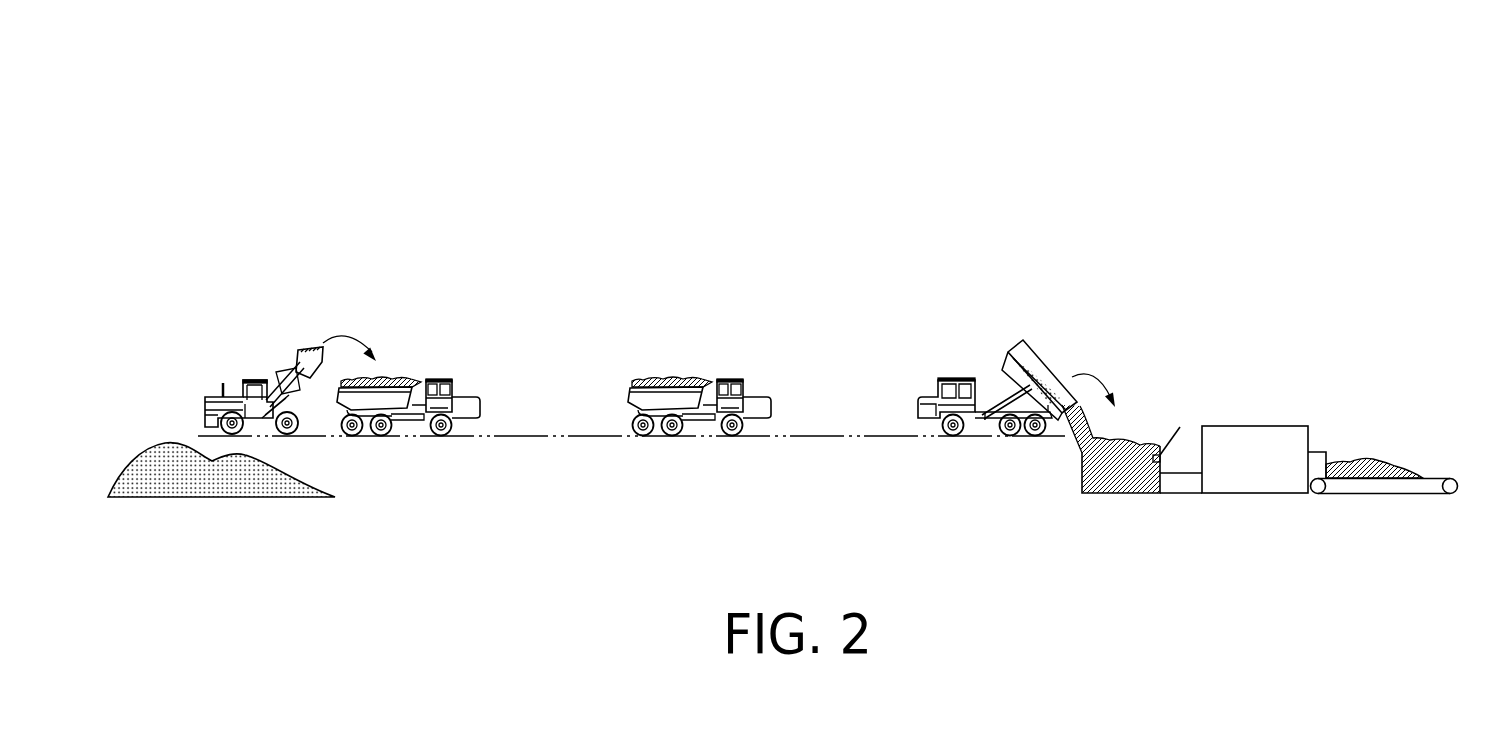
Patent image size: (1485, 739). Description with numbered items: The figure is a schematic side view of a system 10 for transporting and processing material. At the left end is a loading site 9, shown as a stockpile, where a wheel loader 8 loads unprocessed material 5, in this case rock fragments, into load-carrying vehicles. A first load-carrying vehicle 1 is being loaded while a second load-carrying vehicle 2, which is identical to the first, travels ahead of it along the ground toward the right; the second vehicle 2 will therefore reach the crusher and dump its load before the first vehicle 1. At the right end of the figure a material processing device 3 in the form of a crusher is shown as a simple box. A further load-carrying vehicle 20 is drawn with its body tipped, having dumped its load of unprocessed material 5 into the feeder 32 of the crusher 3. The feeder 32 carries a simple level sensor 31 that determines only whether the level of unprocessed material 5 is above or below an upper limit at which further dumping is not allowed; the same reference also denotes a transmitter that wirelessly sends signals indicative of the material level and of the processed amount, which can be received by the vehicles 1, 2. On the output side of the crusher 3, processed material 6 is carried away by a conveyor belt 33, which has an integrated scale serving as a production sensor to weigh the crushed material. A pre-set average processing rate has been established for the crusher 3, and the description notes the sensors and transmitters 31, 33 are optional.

The system 10 is at (326, 146).
The wheel loader 8 is at (260, 381).
The first load-carrying vehicle 1 is at (443, 379).
The unprocessed material 5 is at (670, 374).
The second load-carrying vehicle 2 is at (735, 380).
The further load-carrying vehicle 20 is at (962, 378).
The loading site 9 is at (400, 488).
The material processing device 3 is at (1305, 395).
The feeder 32 is at (1122, 494).
The level sensor 31 is at (1165, 460).
The conveyor belt 33 is at (1385, 495).
The processed material 6 is at (1370, 461).